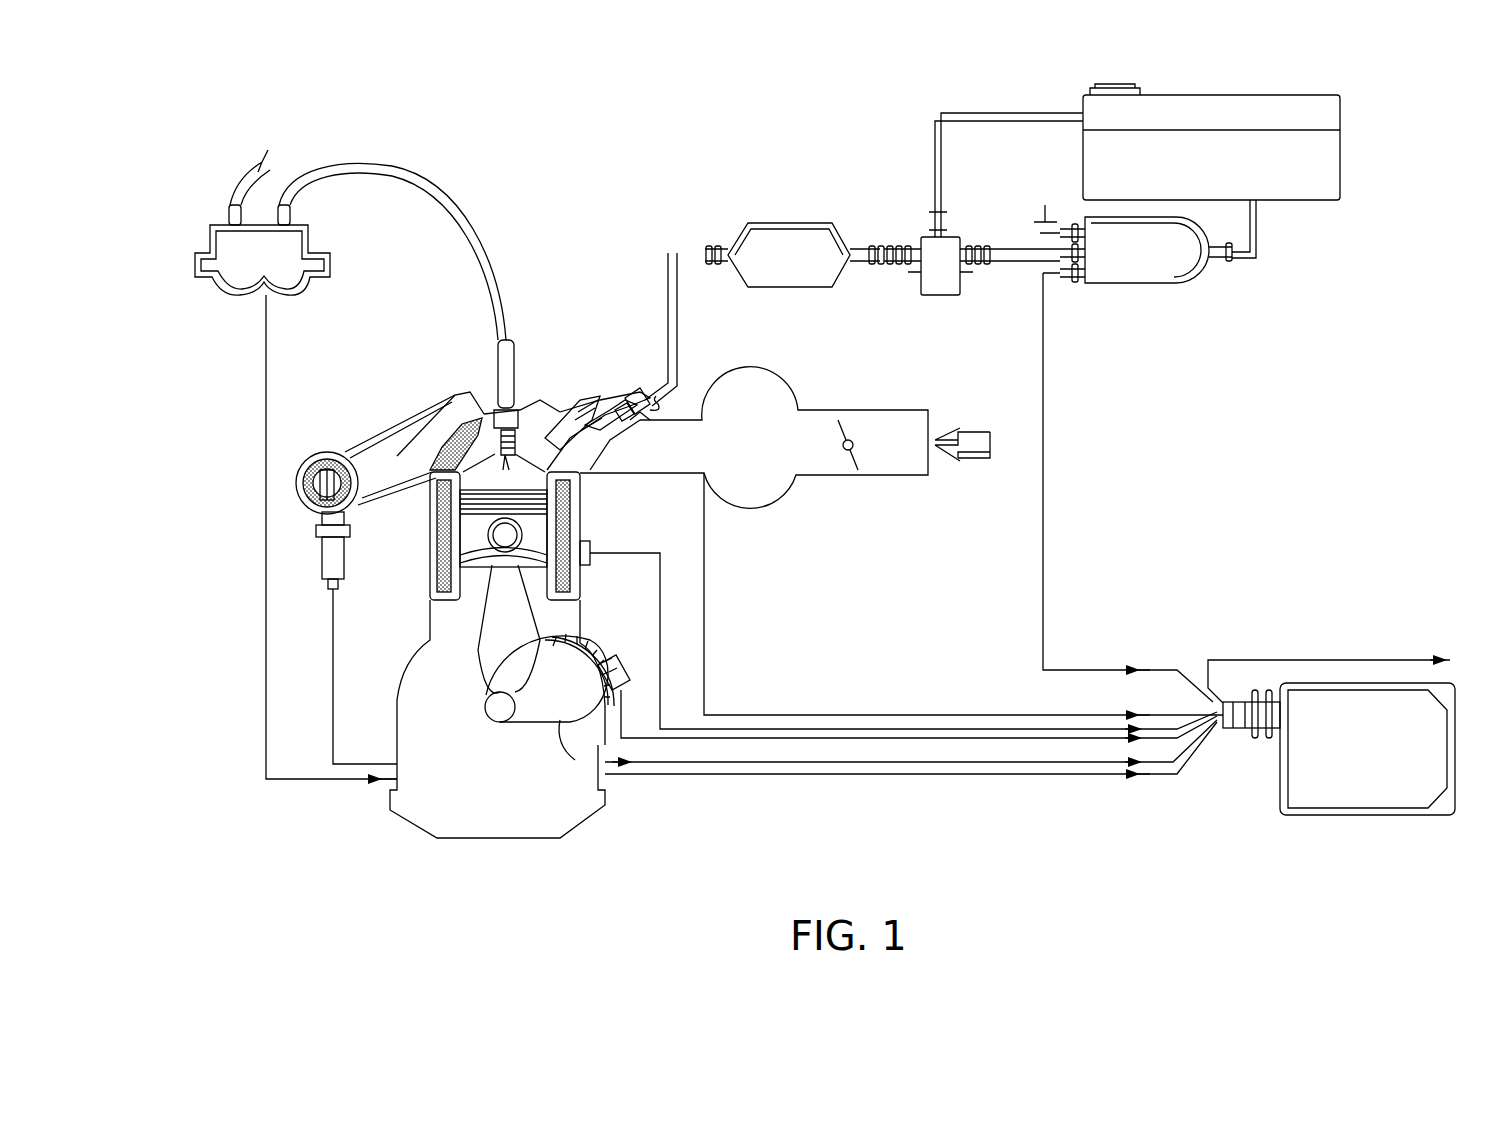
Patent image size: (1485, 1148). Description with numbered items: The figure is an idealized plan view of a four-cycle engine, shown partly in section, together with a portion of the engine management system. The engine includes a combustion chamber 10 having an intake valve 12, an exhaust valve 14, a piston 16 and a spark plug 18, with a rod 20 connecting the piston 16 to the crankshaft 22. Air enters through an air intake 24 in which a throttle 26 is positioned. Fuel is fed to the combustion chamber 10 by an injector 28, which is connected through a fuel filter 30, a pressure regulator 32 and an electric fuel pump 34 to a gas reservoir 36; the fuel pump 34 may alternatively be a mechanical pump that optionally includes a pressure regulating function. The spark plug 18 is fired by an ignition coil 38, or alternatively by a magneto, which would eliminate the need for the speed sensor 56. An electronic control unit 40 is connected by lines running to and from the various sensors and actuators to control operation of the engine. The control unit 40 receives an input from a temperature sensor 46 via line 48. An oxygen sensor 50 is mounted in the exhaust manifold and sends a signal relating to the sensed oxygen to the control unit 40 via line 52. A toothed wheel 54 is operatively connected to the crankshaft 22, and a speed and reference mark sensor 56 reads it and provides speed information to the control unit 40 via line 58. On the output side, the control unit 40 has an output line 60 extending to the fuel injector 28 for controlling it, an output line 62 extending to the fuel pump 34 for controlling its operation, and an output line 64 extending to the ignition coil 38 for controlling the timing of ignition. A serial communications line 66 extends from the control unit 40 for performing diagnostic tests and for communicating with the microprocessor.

The combustion chamber 10 is at (522, 420).
The intake valve 12 is at (556, 395).
The exhaust valve 14 is at (450, 440).
The piston 16 is at (478, 540).
The spark plug 18 is at (516, 395).
The rod 20 is at (510, 583).
The crankshaft 22 is at (505, 715).
The air intake 24 is at (770, 440).
The throttle 26 is at (860, 440).
The injector 28 is at (660, 398).
The fuel filter 30 is at (792, 238).
The pressure regulator 32 is at (942, 250).
The electric fuel pump 34 is at (1160, 268).
The gas reservoir 36 is at (1312, 200).
The ignition coil 38 is at (236, 292).
The electronic control unit 40 is at (1320, 818).
The temperature sensor 46 is at (586, 553).
The line 48 is at (618, 554).
The oxygen sensor 50 is at (320, 575).
The line 52 is at (333, 690).
The toothed wheel 54 is at (575, 715).
The speed and reference mark sensor 56 is at (600, 660).
The line 58 is at (770, 740).
The output line 60 is at (705, 676).
The output line 62 is at (1043, 576).
The output line 64 is at (266, 781).
The serial communications line 66 is at (1292, 660).